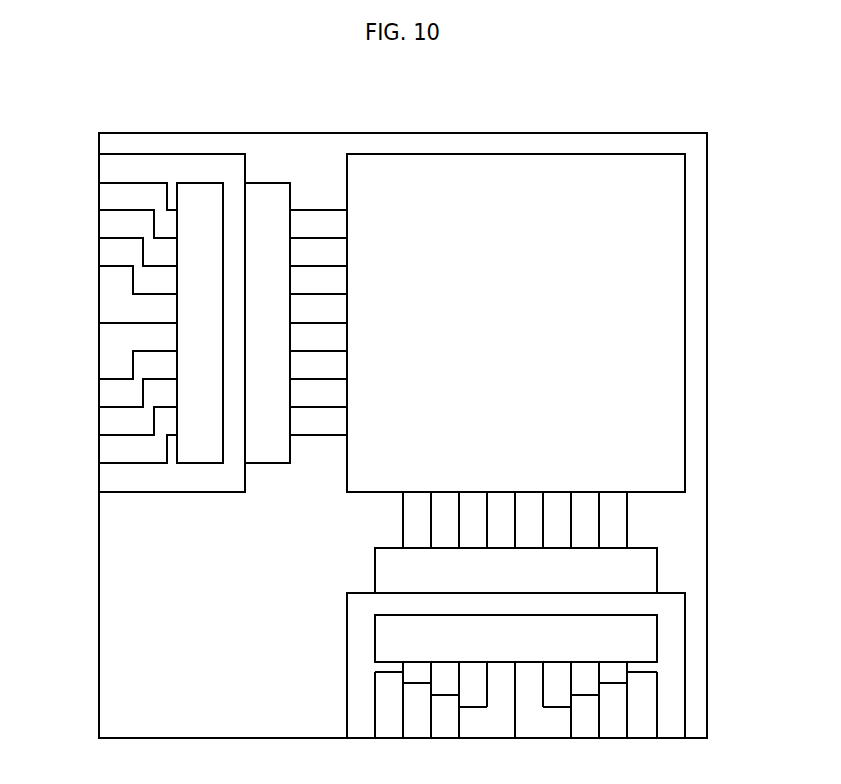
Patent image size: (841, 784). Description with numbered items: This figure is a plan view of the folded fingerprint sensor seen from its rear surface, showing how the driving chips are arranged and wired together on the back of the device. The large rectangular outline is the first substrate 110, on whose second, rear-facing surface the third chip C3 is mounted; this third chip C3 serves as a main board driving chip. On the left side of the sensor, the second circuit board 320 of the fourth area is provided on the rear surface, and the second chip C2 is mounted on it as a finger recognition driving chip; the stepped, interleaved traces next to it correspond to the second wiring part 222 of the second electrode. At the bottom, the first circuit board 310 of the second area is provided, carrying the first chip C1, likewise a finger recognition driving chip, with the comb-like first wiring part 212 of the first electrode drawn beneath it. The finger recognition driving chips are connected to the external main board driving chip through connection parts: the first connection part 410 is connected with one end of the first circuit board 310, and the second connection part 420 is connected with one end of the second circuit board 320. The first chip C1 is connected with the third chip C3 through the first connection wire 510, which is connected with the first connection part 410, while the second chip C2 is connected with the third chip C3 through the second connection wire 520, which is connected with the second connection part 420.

The first substrate 110 is at (707, 212).
The second wiring part 222 is at (111, 210).
The second circuit board 320 is at (120, 355).
The second connection part 420 is at (270, 183).
The second connection wire 520 is at (317, 437).
The second chip C2 is at (202, 465).
The third chip C3 is at (685, 308).
The first connection wire 510 is at (628, 522).
The first connection part 410 is at (657, 565).
The first chip C1 is at (657, 640).
The first circuit board 310 is at (685, 677).
The first wiring part 212 is at (657, 725).